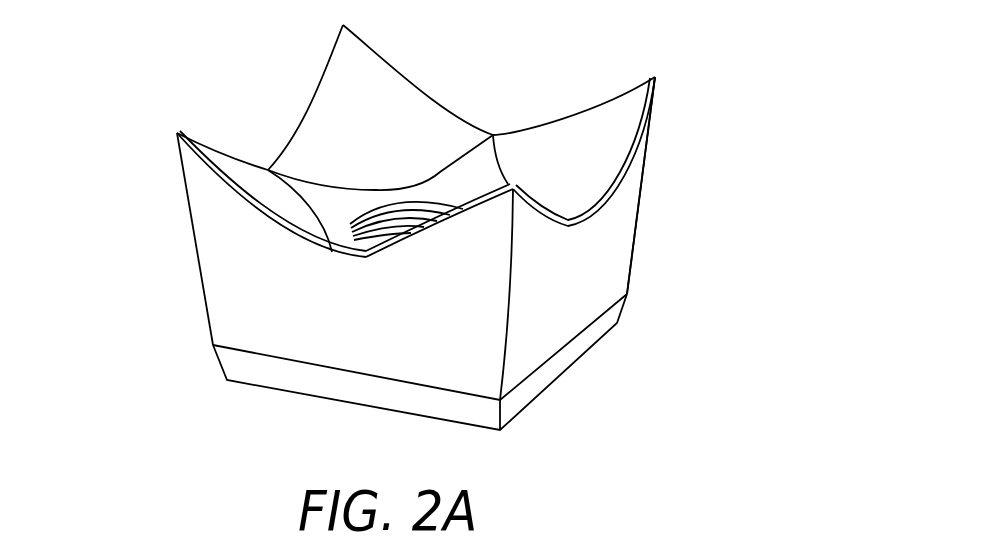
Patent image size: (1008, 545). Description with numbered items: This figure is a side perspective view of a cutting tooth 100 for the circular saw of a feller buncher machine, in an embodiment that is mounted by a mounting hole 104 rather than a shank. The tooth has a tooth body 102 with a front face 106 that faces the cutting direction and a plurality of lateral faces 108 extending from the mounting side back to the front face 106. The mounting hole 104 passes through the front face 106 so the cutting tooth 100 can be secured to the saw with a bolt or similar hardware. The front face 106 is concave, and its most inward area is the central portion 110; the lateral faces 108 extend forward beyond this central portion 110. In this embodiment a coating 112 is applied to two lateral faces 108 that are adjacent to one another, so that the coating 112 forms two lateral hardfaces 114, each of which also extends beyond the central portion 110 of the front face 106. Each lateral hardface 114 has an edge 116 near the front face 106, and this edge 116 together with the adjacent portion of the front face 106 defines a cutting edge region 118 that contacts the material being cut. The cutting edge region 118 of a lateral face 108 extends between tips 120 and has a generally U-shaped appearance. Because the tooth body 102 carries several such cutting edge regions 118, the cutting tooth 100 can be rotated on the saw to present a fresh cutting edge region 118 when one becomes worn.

The cutting tooth 100 is at (780, 97).
The tooth body 102 is at (650, 157).
The mounting hole 104 is at (352, 215).
The front face 106 is at (590, 157).
The lateral faces 108 is at (227, 302).
The central portion 110 is at (407, 200).
The coating 112 is at (203, 233).
The lateral hardface 114 is at (293, 325).
The edge 116 is at (200, 167).
The cutting edge region 118 is at (366, 258).
The tips 120 is at (177, 132).